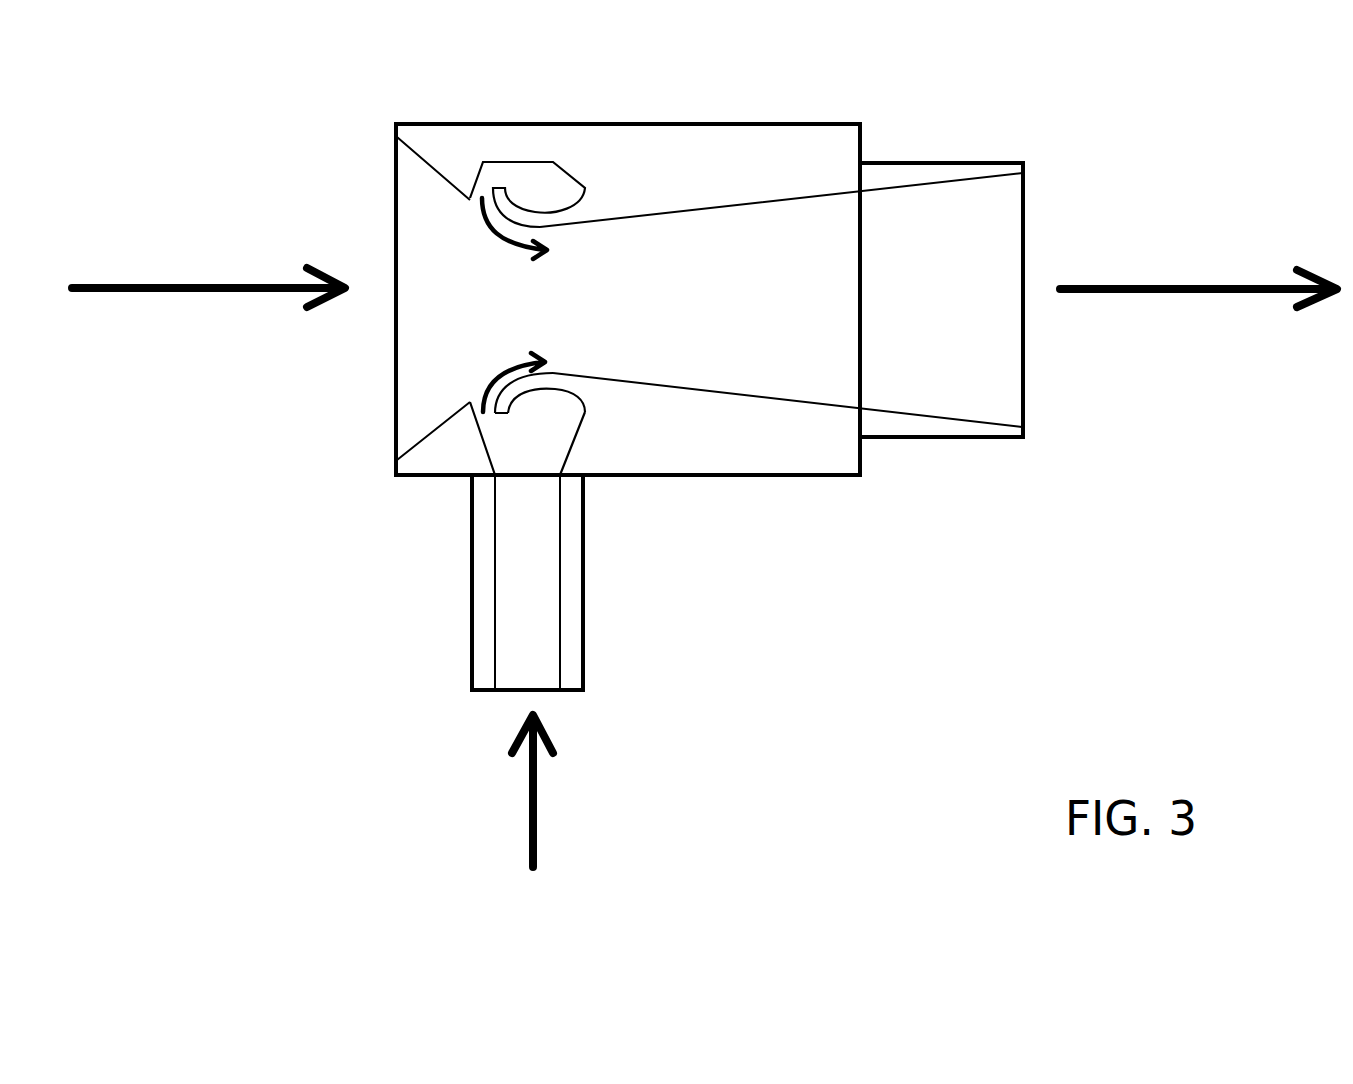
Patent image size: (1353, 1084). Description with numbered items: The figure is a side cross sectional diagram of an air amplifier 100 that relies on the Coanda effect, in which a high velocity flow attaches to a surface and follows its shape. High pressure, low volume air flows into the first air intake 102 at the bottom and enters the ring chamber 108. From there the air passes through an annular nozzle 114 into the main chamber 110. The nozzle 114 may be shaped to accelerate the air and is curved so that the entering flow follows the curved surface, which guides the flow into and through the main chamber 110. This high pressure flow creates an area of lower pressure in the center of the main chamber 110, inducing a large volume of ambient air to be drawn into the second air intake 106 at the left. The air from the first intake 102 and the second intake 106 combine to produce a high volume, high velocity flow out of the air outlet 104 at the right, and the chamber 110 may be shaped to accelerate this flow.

The air amplifier 100 is at (835, 512).
The first air intake 102 is at (467, 627).
The air outlet 104 is at (1023, 398).
The second air intake 106 is at (393, 426).
The ring chamber 108 is at (557, 162).
The main chamber 110 is at (781, 300).
The annular nozzle 114 is at (470, 203).